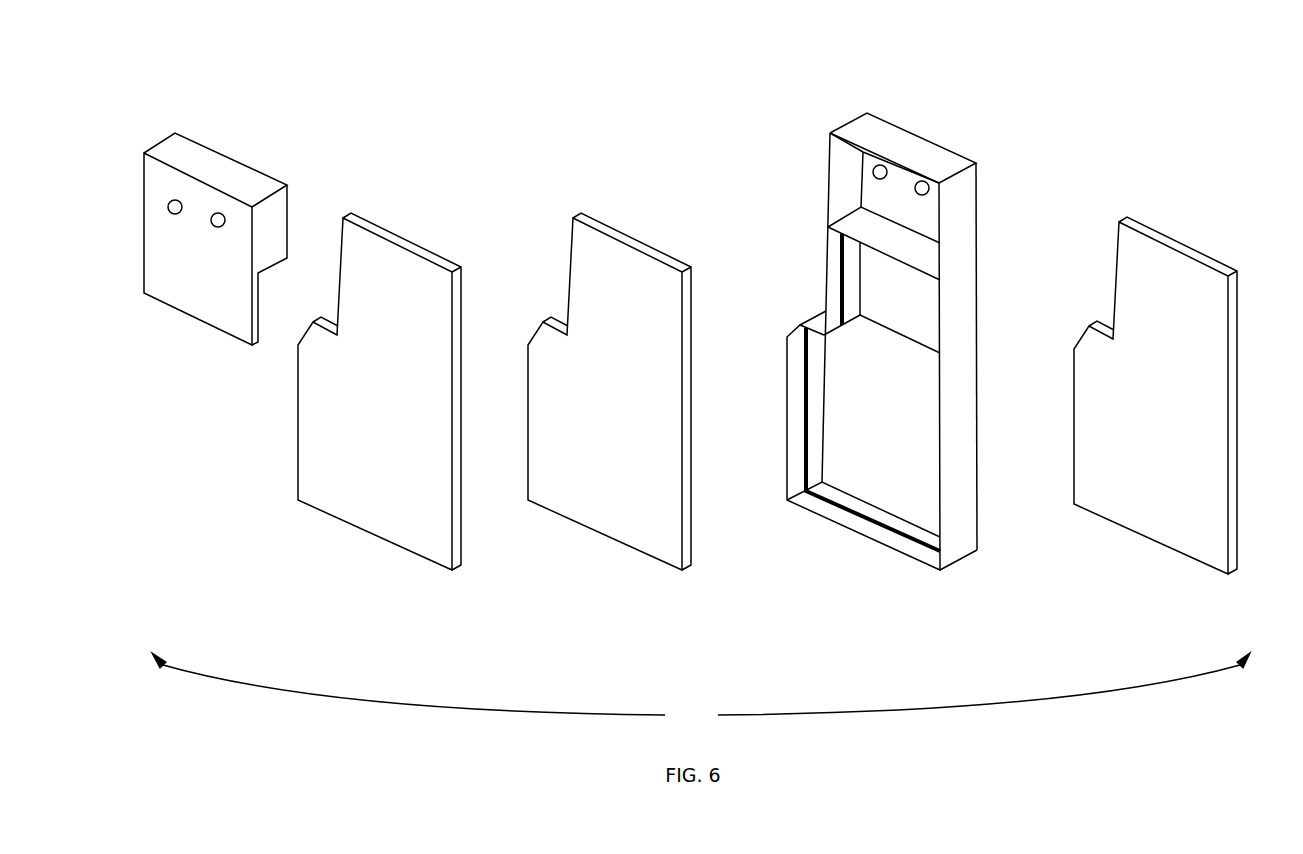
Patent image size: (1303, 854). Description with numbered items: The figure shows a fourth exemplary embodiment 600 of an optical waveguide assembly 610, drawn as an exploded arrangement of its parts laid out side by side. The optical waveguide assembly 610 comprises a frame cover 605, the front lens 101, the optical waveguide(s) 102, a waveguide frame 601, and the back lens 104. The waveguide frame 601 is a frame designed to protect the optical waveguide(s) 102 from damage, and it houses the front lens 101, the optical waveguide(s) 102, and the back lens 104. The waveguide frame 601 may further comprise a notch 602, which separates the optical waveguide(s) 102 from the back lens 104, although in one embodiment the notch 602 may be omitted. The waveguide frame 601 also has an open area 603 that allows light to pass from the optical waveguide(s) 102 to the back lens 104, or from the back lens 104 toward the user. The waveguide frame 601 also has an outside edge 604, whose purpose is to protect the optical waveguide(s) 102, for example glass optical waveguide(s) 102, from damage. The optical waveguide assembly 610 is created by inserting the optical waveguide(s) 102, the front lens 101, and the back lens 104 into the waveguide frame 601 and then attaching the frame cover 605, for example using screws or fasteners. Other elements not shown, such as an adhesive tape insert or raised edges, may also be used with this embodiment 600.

The fourth exemplary embodiment 600 is at (675, 62).
The frame cover 605 is at (212, 146).
The front lens 101 is at (382, 226).
The optical waveguide(s) 102 is at (612, 226).
The waveguide frame 601 is at (940, 151).
The outside edge 604 is at (958, 340).
The open area 603 is at (857, 450).
The notch 602 is at (808, 402).
The back lens 104 is at (1196, 246).
The optical waveguide assembly 610 is at (701, 691).